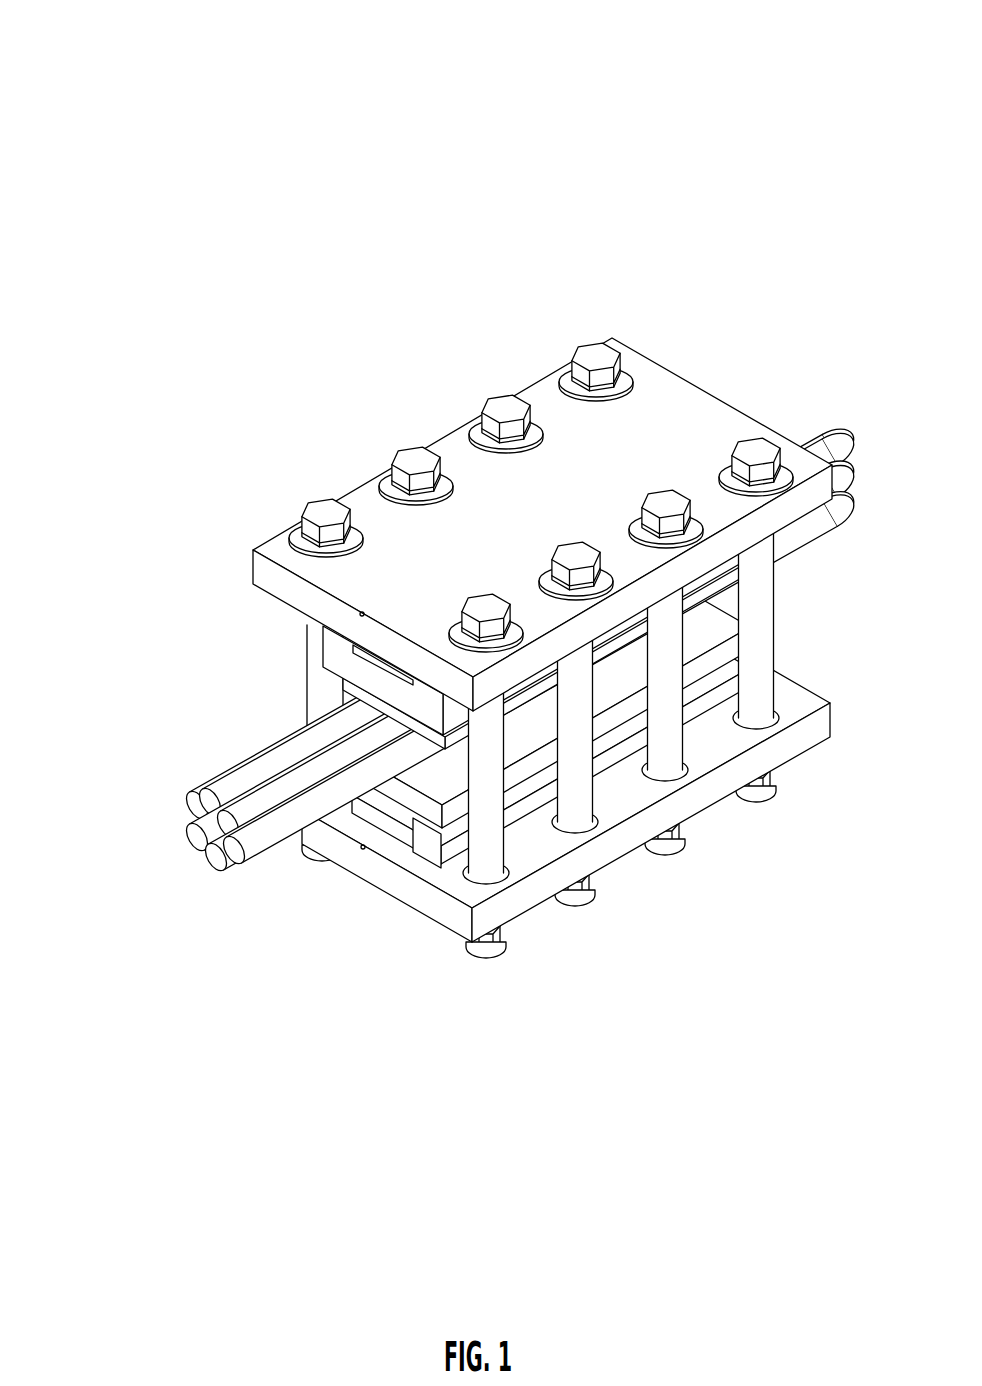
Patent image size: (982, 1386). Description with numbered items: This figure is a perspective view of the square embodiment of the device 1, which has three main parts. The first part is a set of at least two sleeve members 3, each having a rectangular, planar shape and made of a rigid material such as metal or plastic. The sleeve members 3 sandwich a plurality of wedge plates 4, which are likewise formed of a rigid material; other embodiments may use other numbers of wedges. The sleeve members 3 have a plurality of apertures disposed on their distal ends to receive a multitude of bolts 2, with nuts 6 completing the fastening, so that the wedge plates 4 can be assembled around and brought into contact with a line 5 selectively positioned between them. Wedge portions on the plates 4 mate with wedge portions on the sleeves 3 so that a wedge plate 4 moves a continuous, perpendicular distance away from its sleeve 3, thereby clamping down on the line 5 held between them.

The pipe fixing device 1 is at (93, 65).
The bolts 2 is at (387, 465).
The sleeve members 3 is at (253, 566).
The wedge plates 4 is at (322, 650).
The line 5 is at (188, 800).
The nuts 6 is at (510, 932).